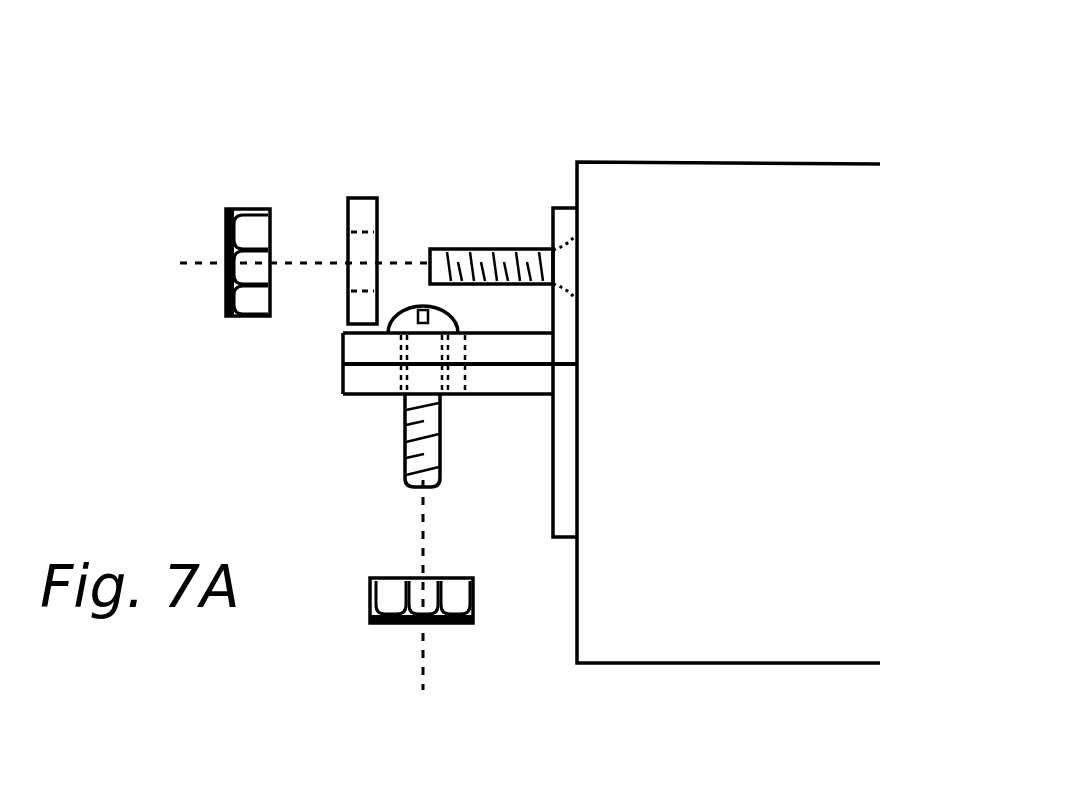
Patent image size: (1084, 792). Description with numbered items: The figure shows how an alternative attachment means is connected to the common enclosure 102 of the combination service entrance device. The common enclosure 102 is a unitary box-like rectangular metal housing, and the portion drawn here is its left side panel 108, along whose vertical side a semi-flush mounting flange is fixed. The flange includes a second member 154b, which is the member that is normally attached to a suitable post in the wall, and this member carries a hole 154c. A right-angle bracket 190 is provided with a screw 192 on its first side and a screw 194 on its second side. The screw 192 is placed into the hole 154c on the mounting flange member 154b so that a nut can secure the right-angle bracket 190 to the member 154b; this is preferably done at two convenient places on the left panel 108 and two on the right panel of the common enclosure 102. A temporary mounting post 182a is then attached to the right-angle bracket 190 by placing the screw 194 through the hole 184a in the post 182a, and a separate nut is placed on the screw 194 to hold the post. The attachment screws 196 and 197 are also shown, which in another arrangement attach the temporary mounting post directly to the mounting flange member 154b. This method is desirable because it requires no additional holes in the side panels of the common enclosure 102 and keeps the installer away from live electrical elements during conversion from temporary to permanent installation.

The common enclosure 102 is at (730, 138).
The left side panel 108 is at (577, 623).
The second member of flange 154b is at (345, 380).
The hole on mounting flange 154c is at (405, 396).
The temporary mounting post 182a is at (363, 186).
The hole on temporary mounting post 184a is at (347, 238).
The right-angle bracket 190 is at (565, 320).
The screw 192 is at (440, 450).
The screw 194 is at (463, 248).
The attachment screw 196 is at (230, 215).
The attachment screw 197 is at (385, 625).